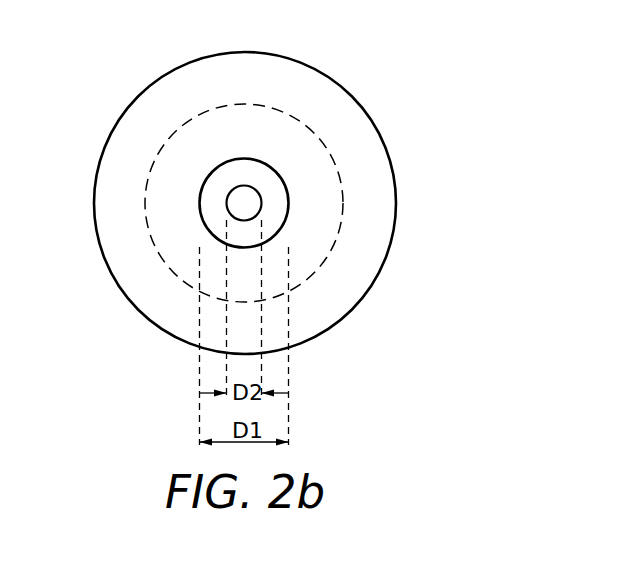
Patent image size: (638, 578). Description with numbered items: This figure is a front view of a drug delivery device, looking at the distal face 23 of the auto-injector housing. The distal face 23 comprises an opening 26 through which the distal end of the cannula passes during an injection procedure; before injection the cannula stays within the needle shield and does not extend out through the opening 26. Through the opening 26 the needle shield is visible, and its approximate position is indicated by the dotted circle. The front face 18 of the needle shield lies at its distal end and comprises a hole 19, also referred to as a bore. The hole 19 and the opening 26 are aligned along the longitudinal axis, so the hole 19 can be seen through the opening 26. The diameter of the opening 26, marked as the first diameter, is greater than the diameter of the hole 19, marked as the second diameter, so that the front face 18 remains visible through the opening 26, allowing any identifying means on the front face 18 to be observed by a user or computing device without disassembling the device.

The distal face 23 is at (97, 201).
The opening 26 is at (275, 170).
The front face 18 is at (280, 193).
The hole 19 is at (244, 186).